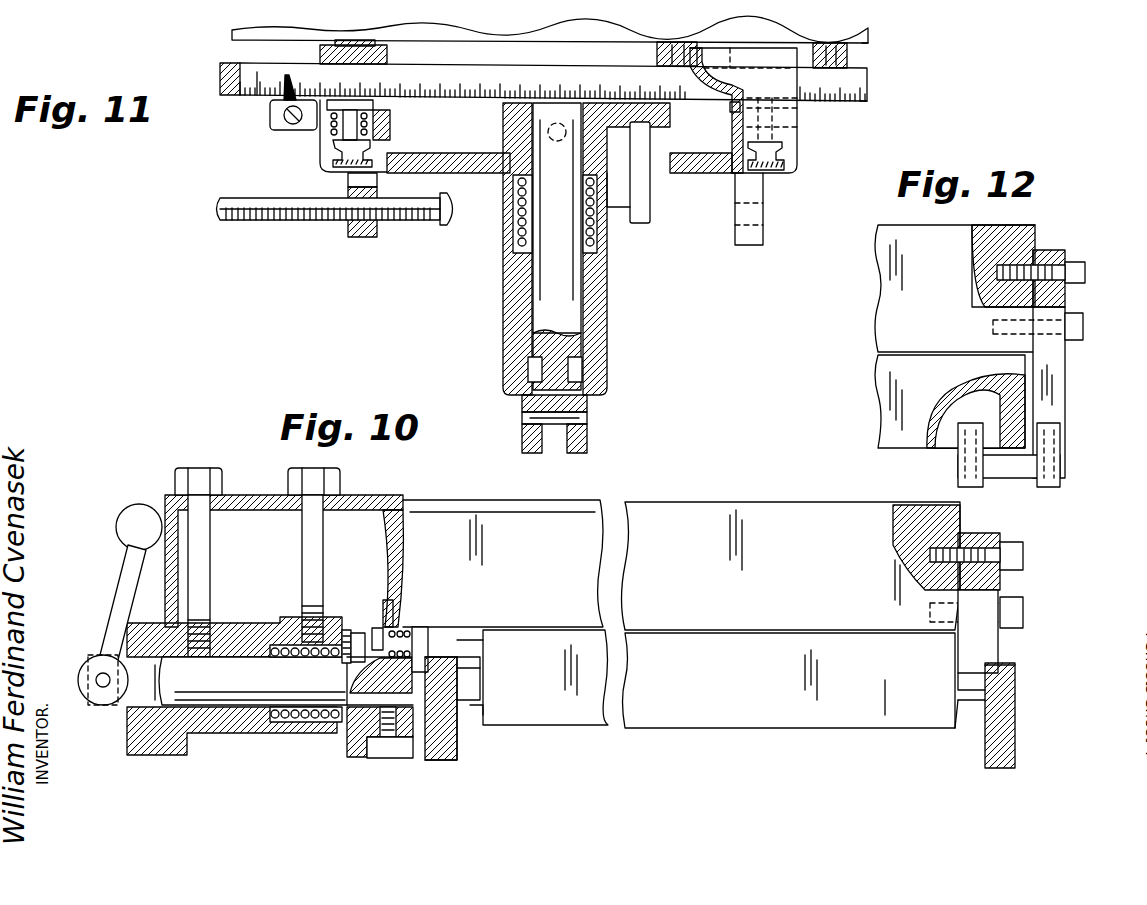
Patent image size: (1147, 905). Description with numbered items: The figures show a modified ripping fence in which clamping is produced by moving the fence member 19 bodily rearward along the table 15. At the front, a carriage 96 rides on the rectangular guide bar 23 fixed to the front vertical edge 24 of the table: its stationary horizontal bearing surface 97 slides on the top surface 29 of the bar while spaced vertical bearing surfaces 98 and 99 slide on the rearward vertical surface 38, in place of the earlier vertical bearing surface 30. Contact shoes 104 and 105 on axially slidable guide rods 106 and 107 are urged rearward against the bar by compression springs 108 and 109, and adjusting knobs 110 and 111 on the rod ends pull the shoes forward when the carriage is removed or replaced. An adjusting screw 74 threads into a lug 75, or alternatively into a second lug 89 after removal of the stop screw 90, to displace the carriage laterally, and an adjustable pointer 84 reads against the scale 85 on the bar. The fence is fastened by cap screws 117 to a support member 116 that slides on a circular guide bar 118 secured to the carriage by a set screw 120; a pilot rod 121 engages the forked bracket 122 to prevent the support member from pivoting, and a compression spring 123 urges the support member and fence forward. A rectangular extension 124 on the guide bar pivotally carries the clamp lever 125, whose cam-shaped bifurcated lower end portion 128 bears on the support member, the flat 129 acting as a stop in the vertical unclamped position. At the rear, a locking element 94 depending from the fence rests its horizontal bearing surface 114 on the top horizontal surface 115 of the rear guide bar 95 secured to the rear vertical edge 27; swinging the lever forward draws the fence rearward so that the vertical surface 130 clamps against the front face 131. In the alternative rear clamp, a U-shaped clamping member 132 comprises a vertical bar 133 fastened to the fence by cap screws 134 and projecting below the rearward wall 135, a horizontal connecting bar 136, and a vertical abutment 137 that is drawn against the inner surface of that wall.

In FIG. 12, the table 15 is at (888, 368).
In FIG. 10, the table 15 is at (582, 715).
In FIG. 12, the longitudinal fence member 19 is at (1017, 235).
In FIG. 10, the longitudinal fence member 19 is at (575, 530).
In FIG. 11, the guide bar 23 is at (255, 63).
In FIG. 10, the guide bar 23 is at (447, 748).
In FIG. 10, the front vertical edge 24 is at (490, 713).
In FIG. 10, the rear vertical edge 27 is at (965, 722).
In FIG. 10, the top surface 29 is at (470, 635).
In FIG. 11, the vertical bearing surface 30 is at (867, 99).
In FIG. 10, the vertical bearing surface 30 is at (430, 690).
In FIG. 11, the rearward vertical surface 38 is at (868, 71).
In FIG. 10, the rearward vertical surface 38 is at (457, 739).
In FIG. 11, the adjusting screw 74 is at (245, 198).
In FIG. 11, the lug 75 is at (355, 238).
In FIG. 11, the adjustable pointer 84 is at (303, 48).
In FIG. 11, the scale 85 is at (257, 74).
In FIG. 11, the second lug 89 is at (745, 190).
In FIG. 11, the stop screw 90 is at (449, 222).
In FIG. 10, the locking element 94 is at (990, 589).
In FIG. 10, the rear guide bar 95 is at (1000, 768).
In FIG. 11, the fence supporting carriage 96 is at (405, 165).
In FIG. 10, the fence supporting carriage 96 is at (355, 745).
In FIG. 10, the horizontal bearing surface 97 is at (462, 671).
In FIG. 11, the vertical bearing surface 98 is at (365, 68).
In FIG. 11, the vertical bearing surface 99 is at (782, 72).
In FIG. 10, the vertical bearing surface 99 is at (460, 647).
In FIG. 11, the contact shoe 104 is at (372, 101).
In FIG. 11, the contact shoe 105 is at (790, 108).
In FIG. 10, the contact shoe 105 is at (462, 632).
In FIG. 11, the guide rod 106 is at (362, 124).
In FIG. 11, the guide rod 107 is at (790, 128).
In FIG. 10, the guide rod 107 is at (393, 630).
In FIG. 11, the compression spring 108 is at (336, 117).
In FIG. 10, the compression spring 109 is at (420, 635).
In FIG. 11, the adjusting knob 110 is at (340, 150).
In FIG. 11, the adjusting knob 111 is at (786, 156).
In FIG. 10, the horizontal bearing surface 114 is at (987, 664).
In FIG. 10, the top horizontal surface 115 is at (1014, 663).
In FIG. 11, the support member 116 is at (515, 292).
In FIG. 10, the support member 116 is at (225, 725).
In FIG. 10, the cap screws 117 is at (200, 536).
In FIG. 11, the circular guide bar 118 is at (543, 312).
In FIG. 10, the circular guide bar 118 is at (235, 672).
In FIG. 10, the set screw 120 is at (383, 740).
In FIG. 11, the pilot rod 121 is at (645, 139).
In FIG. 11, the bracket 122 is at (622, 208).
In FIG. 11, the compression spring 123 is at (513, 237).
In FIG. 10, the compression spring 123 is at (322, 660).
In FIG. 11, the rectangular extension 124 is at (528, 371).
In FIG. 10, the rectangular extension 124 is at (100, 652).
In FIG. 10, the clamp lever 125 is at (120, 573).
In FIG. 11, the bifurcated lower end portion 128 is at (583, 439).
In FIG. 10, the bifurcated lower end portion 128 is at (105, 707).
In FIG. 10, the flat 129 is at (132, 679).
In FIG. 10, the vertical surface 130 is at (985, 667).
In FIG. 10, the front face 131 is at (985, 692).
In FIG. 12, the U-shaped clamping member 132 is at (1083, 372).
In FIG. 12, the vertical bar 133 is at (1047, 414).
In FIG. 12, the cap screws 134 is at (1080, 267).
In FIG. 12, the rearward wall 135 is at (1005, 403).
In FIG. 12, the horizontal connecting bar 136 is at (1015, 473).
In FIG. 12, the vertical abutment 137 is at (965, 432).